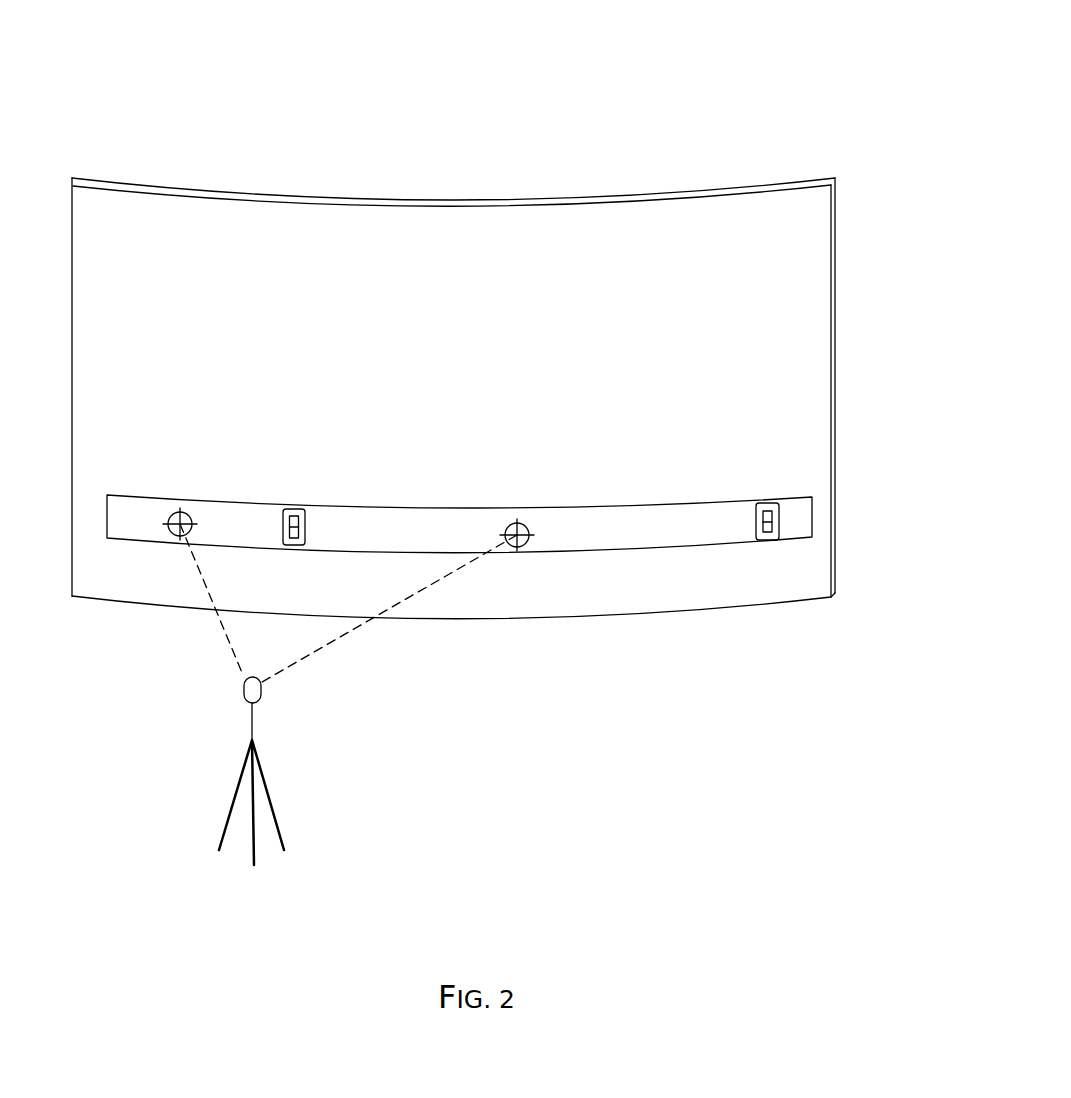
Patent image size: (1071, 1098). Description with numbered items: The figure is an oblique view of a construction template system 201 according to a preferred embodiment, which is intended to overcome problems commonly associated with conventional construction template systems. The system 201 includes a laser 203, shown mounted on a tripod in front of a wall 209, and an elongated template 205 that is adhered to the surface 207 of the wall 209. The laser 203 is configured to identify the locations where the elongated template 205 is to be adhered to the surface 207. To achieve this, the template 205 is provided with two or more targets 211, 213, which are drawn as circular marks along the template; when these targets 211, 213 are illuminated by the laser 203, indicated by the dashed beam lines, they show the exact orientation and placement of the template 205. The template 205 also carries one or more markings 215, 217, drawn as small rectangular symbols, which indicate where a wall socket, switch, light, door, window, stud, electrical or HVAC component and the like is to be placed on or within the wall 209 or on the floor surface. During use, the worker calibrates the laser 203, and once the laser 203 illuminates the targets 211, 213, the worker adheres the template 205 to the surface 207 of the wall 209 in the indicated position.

The system 201 is at (122, 56).
The laser 203 is at (244, 690).
The elongated template 205 is at (597, 505).
The surface 207 is at (474, 349).
The wall 209 is at (832, 278).
The target 211 is at (168, 521).
The target 213 is at (525, 545).
The marking 215 is at (283, 512).
The marking 217 is at (781, 508).